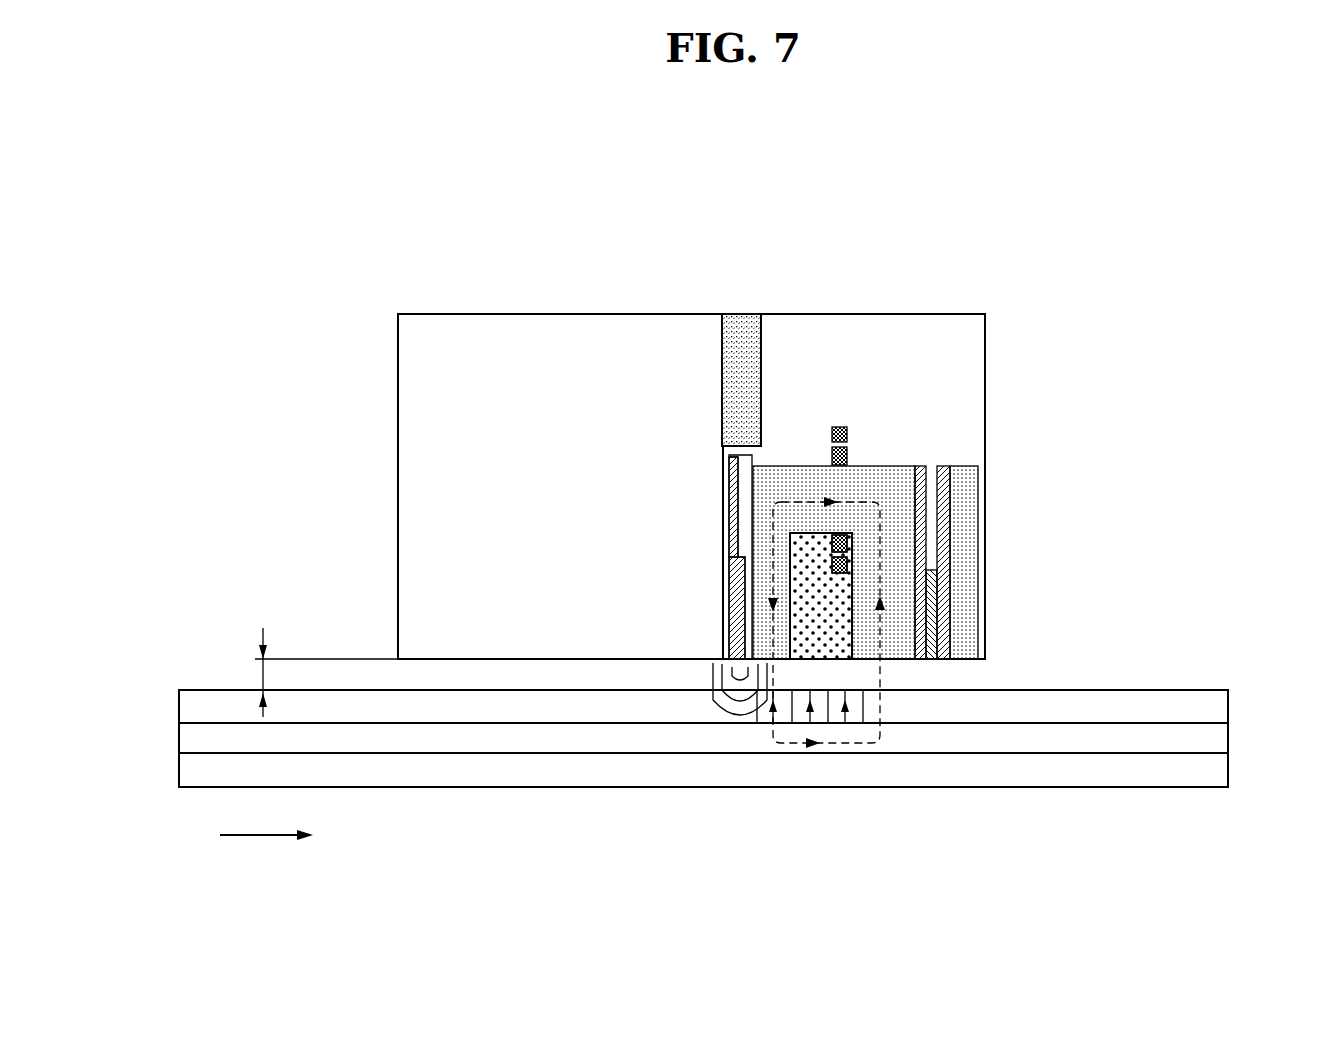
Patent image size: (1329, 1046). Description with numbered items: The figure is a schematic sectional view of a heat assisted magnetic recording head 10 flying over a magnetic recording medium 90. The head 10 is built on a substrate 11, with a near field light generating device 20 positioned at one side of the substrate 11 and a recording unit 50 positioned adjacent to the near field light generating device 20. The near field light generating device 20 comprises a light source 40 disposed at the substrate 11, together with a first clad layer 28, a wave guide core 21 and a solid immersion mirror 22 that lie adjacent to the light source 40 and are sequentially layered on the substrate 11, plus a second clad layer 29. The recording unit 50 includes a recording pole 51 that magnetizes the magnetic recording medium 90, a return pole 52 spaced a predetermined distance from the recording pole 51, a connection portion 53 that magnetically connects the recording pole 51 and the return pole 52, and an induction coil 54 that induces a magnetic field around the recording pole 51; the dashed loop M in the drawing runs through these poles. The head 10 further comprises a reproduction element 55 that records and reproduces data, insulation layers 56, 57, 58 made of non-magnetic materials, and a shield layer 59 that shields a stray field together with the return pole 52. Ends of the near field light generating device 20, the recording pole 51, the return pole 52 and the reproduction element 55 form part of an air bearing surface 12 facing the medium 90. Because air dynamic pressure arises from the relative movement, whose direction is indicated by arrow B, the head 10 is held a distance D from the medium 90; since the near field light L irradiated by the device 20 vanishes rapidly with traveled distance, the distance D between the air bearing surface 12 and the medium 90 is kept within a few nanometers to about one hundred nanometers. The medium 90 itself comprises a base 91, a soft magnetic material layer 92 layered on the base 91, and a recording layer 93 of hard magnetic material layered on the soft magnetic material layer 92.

The heat assisted magnetic recording head 10 is at (1003, 345).
The substrate 11 is at (413, 446).
The air bearing surface 12 is at (422, 660).
The near field light generating device 20 is at (638, 528).
The wave guide core 21 is at (728, 518).
The solid immersion mirror 22 is at (730, 612).
The first clad layer 28 is at (728, 500).
The second clad layer 29 is at (747, 475).
The light source 40 is at (744, 318).
The recording unit 50 is at (884, 412).
The recording pole 51 is at (765, 652).
The return pole 52 is at (900, 637).
The connection portion 53 is at (866, 481).
The induction coil 54 is at (840, 425).
The reproduction element 55 is at (950, 593).
The insulation layer 56 is at (833, 650).
The insulation layer 57 is at (955, 631).
The insulation layer 58 is at (945, 557).
The shield layer 59 is at (968, 530).
The magnetic recording medium 90 is at (1220, 668).
The base 91 is at (1222, 770).
The soft magnetic material layer 92 is at (1222, 738).
The recording layer 93 is at (1222, 705).
The magnetic flux path M is at (791, 500).
The near field light L is at (713, 712).
The distance D is at (313, 672).
The direction of relative movement B is at (267, 835).